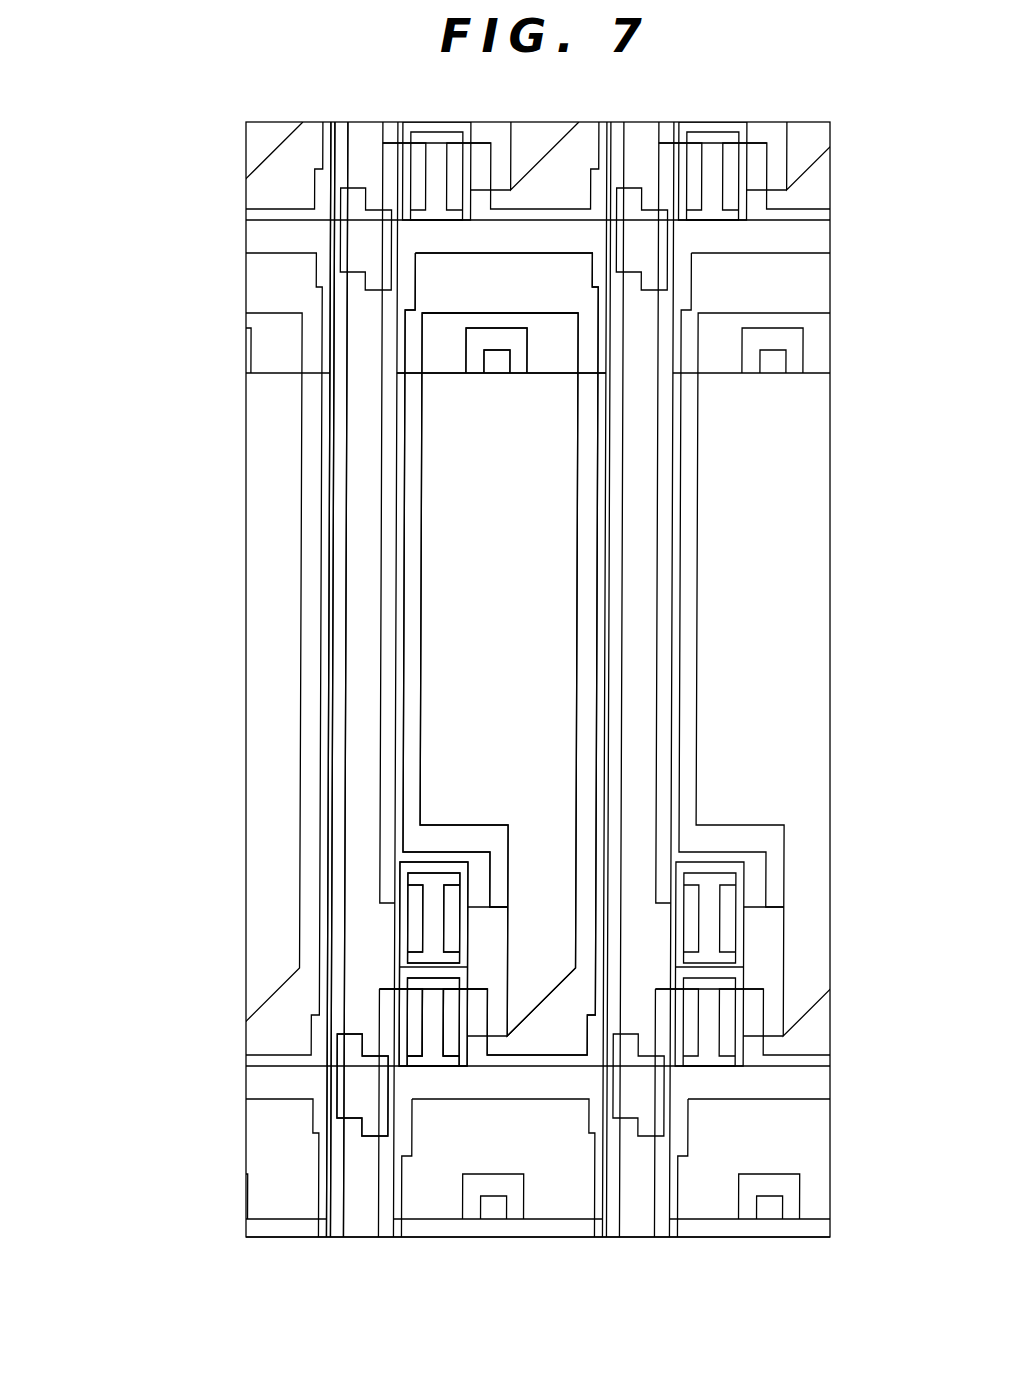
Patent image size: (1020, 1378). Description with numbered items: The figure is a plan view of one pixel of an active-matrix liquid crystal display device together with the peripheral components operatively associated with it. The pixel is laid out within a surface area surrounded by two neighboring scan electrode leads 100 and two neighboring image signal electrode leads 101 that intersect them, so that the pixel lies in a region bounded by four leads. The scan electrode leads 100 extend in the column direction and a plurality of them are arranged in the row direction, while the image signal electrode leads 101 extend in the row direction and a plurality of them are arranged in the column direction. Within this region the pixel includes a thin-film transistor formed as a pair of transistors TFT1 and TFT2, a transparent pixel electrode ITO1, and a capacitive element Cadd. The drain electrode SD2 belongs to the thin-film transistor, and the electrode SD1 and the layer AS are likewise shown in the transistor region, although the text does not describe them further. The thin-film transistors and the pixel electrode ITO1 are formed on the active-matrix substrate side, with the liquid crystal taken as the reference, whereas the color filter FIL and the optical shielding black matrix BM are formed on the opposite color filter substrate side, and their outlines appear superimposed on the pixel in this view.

The scan electrode lead 100 is at (374, 259).
The image signal electrode lead 101 is at (380, 632).
The pixel electrode ITO1 is at (410, 589).
The black matrix BM is at (578, 662).
The capacitive element Cadd is at (550, 289).
The thin-film transistor TFT1 is at (478, 877).
The thin-film transistor TFT2 is at (597, 958).
The amorphous silicon layer AS is at (405, 936).
The drain electrode SD2 is at (428, 1012).
The source/drain electrode SD1 is at (452, 1046).
The color filter FIL is at (610, 1228).